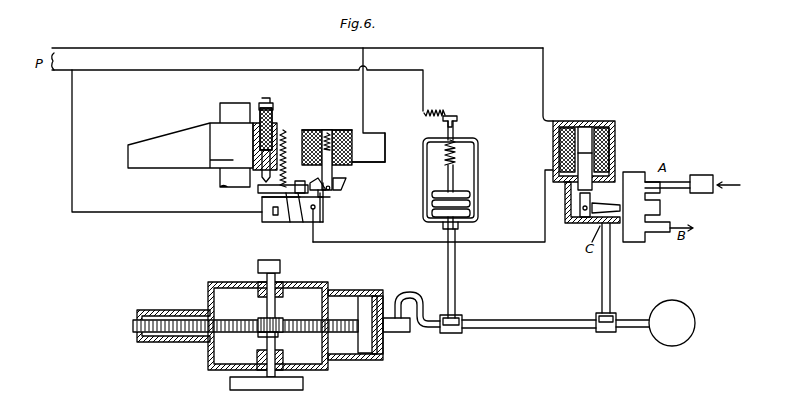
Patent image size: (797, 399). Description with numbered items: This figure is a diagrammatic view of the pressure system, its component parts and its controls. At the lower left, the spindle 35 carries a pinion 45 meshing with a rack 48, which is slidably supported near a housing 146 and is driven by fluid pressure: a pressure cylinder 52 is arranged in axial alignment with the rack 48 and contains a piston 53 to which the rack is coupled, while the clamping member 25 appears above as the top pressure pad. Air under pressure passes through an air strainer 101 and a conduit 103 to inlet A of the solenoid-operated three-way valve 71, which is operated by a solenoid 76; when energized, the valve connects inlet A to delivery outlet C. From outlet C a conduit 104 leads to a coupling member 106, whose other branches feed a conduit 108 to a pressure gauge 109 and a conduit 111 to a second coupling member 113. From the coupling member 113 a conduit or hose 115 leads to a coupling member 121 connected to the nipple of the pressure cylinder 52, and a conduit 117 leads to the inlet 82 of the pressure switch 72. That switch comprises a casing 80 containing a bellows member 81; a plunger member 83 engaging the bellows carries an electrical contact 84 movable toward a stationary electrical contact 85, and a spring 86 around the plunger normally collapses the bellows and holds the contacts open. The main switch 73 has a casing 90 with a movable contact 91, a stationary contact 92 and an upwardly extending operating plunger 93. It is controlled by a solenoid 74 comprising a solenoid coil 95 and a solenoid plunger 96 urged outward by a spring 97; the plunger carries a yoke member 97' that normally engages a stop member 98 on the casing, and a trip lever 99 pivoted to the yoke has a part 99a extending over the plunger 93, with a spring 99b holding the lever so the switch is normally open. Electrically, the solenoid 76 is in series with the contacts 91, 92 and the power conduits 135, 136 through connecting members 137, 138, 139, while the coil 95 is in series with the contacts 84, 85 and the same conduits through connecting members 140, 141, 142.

The clamping member 25 is at (172, 135).
The spindle 35 is at (276, 309).
The pinion 45 is at (258, 331).
The rack 48 is at (132, 326).
The pressure cylinder 52 is at (348, 296).
The piston 53 is at (377, 296).
The solenoid-operated three-way valve 71 is at (651, 210).
The pressure switch 72 is at (427, 180).
The main switch 73 is at (296, 214).
The solenoid 74 is at (352, 150).
The solenoid 76 is at (615, 136).
The casing 80 is at (478, 162).
The bellows member 81 is at (470, 203).
The inlet 82 is at (458, 228).
The plunger member 83 is at (455, 182).
The electrical contact 84 is at (455, 133).
The stationary electrical contact 85 is at (457, 116).
The spring 86 is at (458, 150).
The casing 90 is at (262, 216).
The movable contact 91 is at (285, 214).
The stationary contact 92 is at (272, 216).
The operating plunger 93 is at (313, 228).
The solenoid coil 95 is at (312, 128).
The solenoid plunger 96 is at (333, 168).
The spring 97 is at (327, 134).
The yoke member 97' is at (341, 185).
The stop member 98 is at (332, 194).
The trip lever 99 is at (262, 192).
The part 99a is at (325, 200).
The spring 99b is at (300, 123).
The air strainer 101 is at (708, 177).
The conduit 103 is at (680, 182).
The conduit 104 is at (611, 265).
The coupling member 106 is at (606, 333).
The conduit 108 is at (629, 318).
The pressure gauge 109 is at (695, 321).
The conduit 111 is at (538, 330).
The coupling member 113 is at (452, 333).
The conduit or hose 115 is at (420, 288).
The conduit 117 is at (456, 256).
The coupling member 121 is at (400, 339).
The conduit 135 is at (205, 70).
The conduit 136 is at (209, 42).
The electrical connecting member 137 is at (397, 242).
The electrical connecting member 138 is at (152, 212).
The electrical connecting member 139 is at (543, 68).
The electrical connecting member 140 is at (401, 133).
The electrical connecting member 141 is at (423, 88).
The electrical connecting member 142 is at (363, 92).
The housing 146 is at (166, 305).